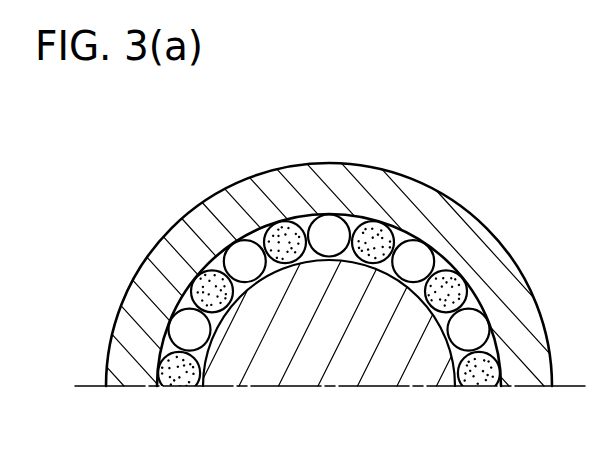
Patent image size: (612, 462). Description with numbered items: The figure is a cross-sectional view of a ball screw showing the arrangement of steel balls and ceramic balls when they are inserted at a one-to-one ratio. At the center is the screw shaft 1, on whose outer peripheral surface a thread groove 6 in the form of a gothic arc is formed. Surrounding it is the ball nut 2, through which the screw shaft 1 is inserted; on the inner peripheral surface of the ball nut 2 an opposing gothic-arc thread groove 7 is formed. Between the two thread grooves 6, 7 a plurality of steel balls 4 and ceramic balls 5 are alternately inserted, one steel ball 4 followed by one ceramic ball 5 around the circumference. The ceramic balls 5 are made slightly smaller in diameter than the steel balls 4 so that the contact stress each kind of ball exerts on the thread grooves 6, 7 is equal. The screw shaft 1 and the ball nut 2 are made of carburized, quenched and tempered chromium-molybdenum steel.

The screw shaft 1 is at (376, 372).
The ball nut 2 is at (468, 243).
The steel ball 4 is at (327, 221).
The ceramic ball 5 is at (273, 226).
The thread groove 6 is at (183, 372).
The thread groove 7 is at (403, 242).